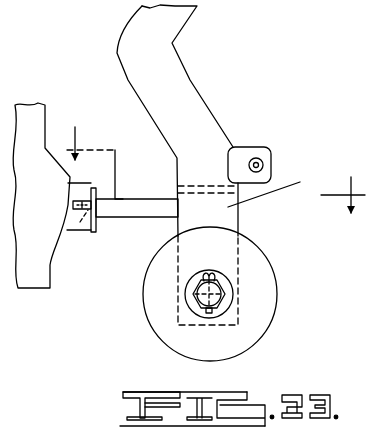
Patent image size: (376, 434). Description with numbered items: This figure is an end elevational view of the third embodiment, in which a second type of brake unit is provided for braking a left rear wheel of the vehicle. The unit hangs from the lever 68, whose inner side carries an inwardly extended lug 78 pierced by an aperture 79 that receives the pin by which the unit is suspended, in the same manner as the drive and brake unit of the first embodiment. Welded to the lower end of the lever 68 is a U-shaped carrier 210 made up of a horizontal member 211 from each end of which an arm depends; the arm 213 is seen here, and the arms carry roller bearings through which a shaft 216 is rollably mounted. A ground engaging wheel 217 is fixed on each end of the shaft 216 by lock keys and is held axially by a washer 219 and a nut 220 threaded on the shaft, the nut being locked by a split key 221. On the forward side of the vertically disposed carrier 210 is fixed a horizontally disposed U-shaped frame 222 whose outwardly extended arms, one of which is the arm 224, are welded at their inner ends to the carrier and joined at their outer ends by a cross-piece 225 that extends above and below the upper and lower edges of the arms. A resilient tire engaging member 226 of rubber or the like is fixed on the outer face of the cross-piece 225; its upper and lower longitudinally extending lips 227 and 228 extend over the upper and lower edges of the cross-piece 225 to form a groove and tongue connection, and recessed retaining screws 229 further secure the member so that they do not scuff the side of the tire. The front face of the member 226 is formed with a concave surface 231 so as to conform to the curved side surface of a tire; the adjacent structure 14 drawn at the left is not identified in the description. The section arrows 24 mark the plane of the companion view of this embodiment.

The frame member 14 is at (40, 160).
The section line 24 is at (215, 185).
The lever 68 is at (191, 67).
The lug 78 is at (248, 148).
The aperture 79 is at (263, 163).
The U-shaped carrier 210 is at (243, 215).
The horizontal member 211 is at (189, 186).
The arm 213 is at (282, 189).
The shaft 216 is at (218, 297).
The ground engaging wheel 217 is at (263, 301).
The washer 219 is at (232, 280).
The nut 220 is at (230, 291).
The split key 221 is at (206, 313).
The U-shaped frame 222 is at (155, 200).
The arm 224 is at (166, 208).
The cross-piece 225 is at (115, 183).
The tire engaging member 226 is at (93, 234).
The upper lip 227 is at (100, 198).
The lower lip 228 is at (100, 237).
The retaining screw 229 is at (70, 234).
The concave surface 231 is at (70, 190).